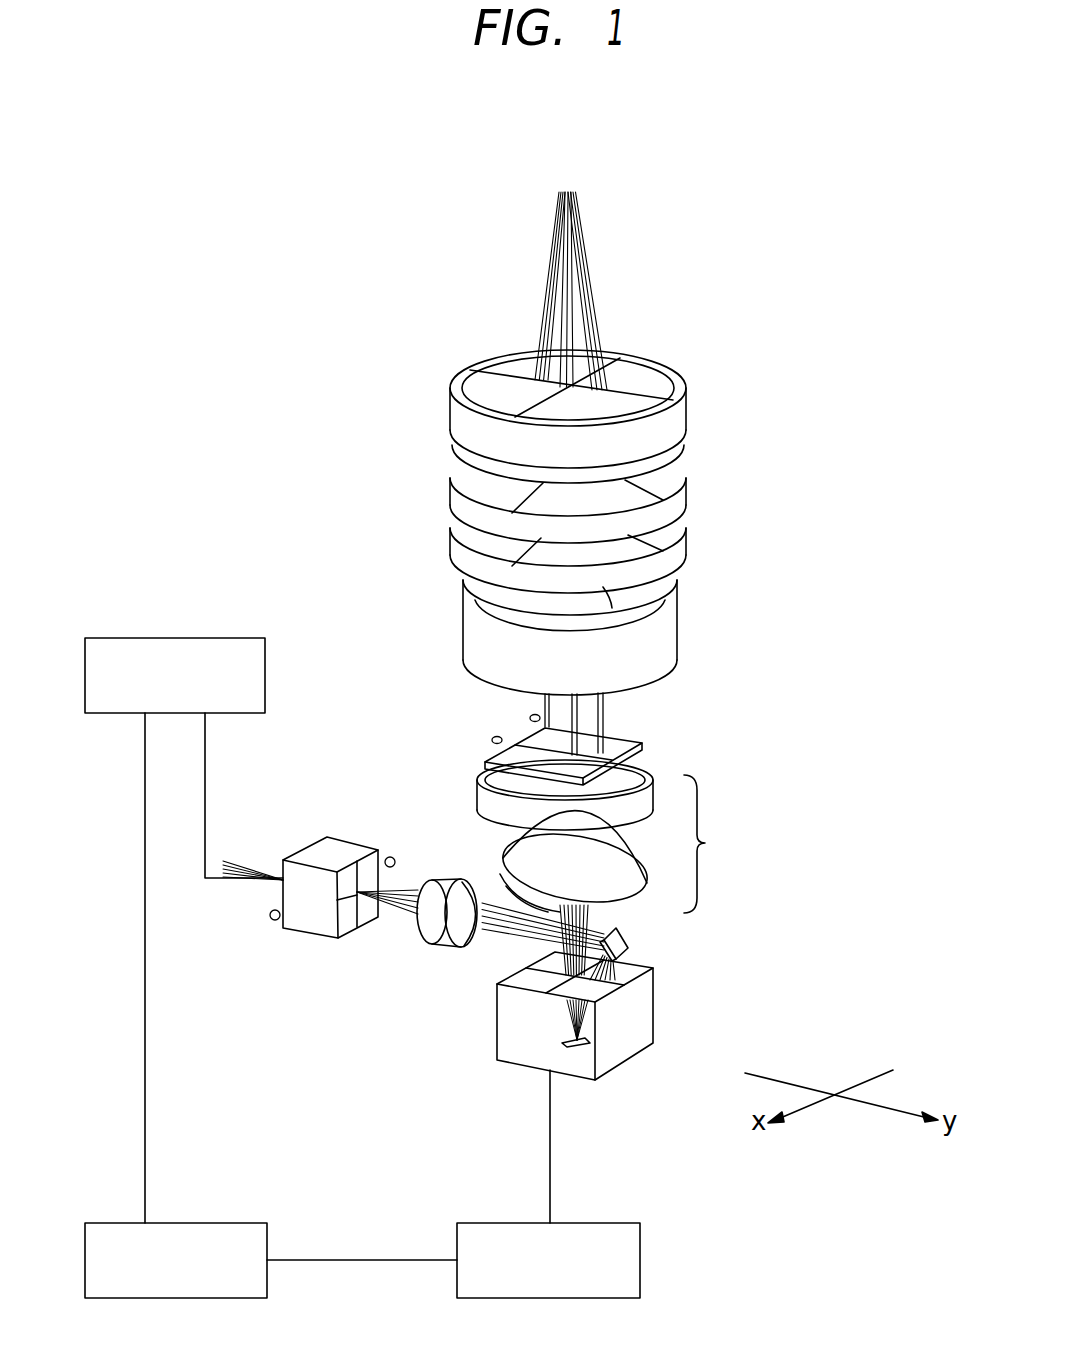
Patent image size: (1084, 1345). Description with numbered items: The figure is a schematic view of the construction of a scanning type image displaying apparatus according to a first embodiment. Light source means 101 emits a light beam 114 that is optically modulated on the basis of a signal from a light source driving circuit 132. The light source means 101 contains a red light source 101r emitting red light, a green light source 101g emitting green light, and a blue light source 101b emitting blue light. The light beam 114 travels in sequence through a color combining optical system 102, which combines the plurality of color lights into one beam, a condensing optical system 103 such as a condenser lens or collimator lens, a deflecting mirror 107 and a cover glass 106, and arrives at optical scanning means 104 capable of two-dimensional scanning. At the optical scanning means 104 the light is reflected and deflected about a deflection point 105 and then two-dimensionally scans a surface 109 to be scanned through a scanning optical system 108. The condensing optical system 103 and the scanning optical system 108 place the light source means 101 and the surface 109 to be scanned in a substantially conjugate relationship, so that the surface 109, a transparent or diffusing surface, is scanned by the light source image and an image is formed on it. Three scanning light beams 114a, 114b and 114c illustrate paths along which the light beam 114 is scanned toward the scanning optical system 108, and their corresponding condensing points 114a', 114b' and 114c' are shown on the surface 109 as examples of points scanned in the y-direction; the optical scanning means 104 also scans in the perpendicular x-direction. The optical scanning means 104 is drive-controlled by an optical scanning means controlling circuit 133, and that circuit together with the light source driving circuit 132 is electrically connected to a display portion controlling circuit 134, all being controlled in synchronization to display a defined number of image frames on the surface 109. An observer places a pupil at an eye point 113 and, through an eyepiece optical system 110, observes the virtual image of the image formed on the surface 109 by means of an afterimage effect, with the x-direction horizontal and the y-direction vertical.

The light source means 101 is at (320, 822).
The red light source 101r is at (271, 919).
The green light source 101g is at (280, 866).
The blue light source 101b is at (390, 867).
The color combining optical system 102 is at (327, 895).
The condensing optical system 103 is at (422, 930).
The optical scanning means 104 is at (517, 1043).
The deflection point 105 is at (593, 1043).
The cover glass 106 is at (655, 969).
The deflecting mirror 107 is at (632, 945).
The scanning optical system 108 is at (609, 836).
The surface to be scanned 109 is at (570, 312).
The eyepiece optical system 110 is at (700, 490).
The eye point 113 is at (570, 190).
The light beam 114 is at (505, 928).
The scanning light beam 114a is at (436, 860).
The scanning light beam 114b is at (441, 834).
The scanning light beam 114c is at (472, 817).
The condensing point 114a' is at (709, 687).
The condensing point 114b' is at (693, 709).
The condensing point 114c' is at (639, 719).
The light source driving circuit 132 is at (175, 930).
The optical scanning means controlling circuit 133 is at (548, 1260).
The display portion controlling circuit 134 is at (271, 1260).